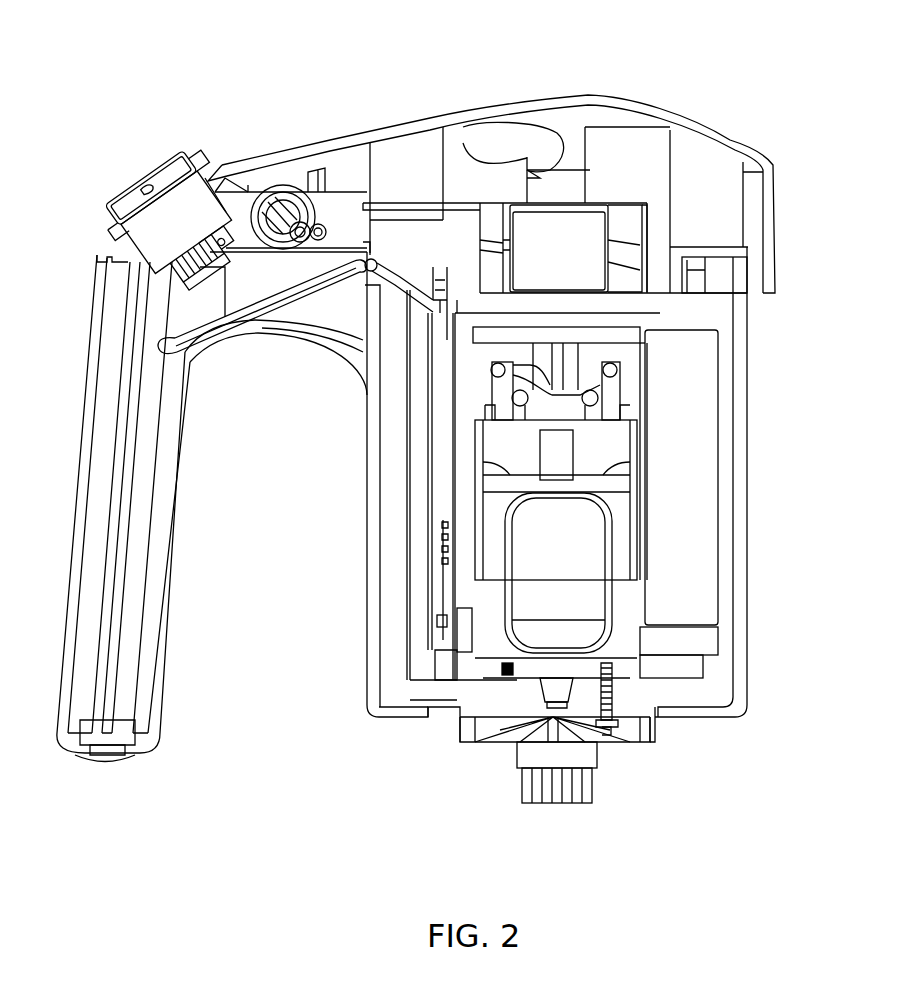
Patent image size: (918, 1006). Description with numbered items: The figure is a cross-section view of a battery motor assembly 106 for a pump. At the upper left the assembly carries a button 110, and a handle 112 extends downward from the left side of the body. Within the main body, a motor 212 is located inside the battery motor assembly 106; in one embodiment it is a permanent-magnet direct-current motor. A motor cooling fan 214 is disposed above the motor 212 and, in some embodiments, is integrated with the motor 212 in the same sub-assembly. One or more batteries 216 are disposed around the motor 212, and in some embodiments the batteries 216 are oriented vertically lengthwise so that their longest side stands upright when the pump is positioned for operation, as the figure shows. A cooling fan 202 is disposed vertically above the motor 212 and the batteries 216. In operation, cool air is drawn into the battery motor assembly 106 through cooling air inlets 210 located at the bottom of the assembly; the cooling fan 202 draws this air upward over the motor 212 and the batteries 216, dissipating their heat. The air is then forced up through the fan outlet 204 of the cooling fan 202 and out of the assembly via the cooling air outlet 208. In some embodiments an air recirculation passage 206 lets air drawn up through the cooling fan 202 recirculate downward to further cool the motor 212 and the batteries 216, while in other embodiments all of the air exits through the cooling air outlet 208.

The battery motor assembly 106 is at (86, 100).
The button 110 is at (157, 160).
The handle 112 is at (87, 337).
The cooling fan 202 is at (568, 200).
The fan outlet 204 is at (627, 190).
The air recirculation passage 206 is at (657, 235).
The cooling air outlet 208 is at (748, 305).
The cooling air inlets 210 is at (442, 730).
The motor 212 is at (613, 557).
The motor cooling fan 214 is at (628, 480).
The batteries 216 is at (718, 410).